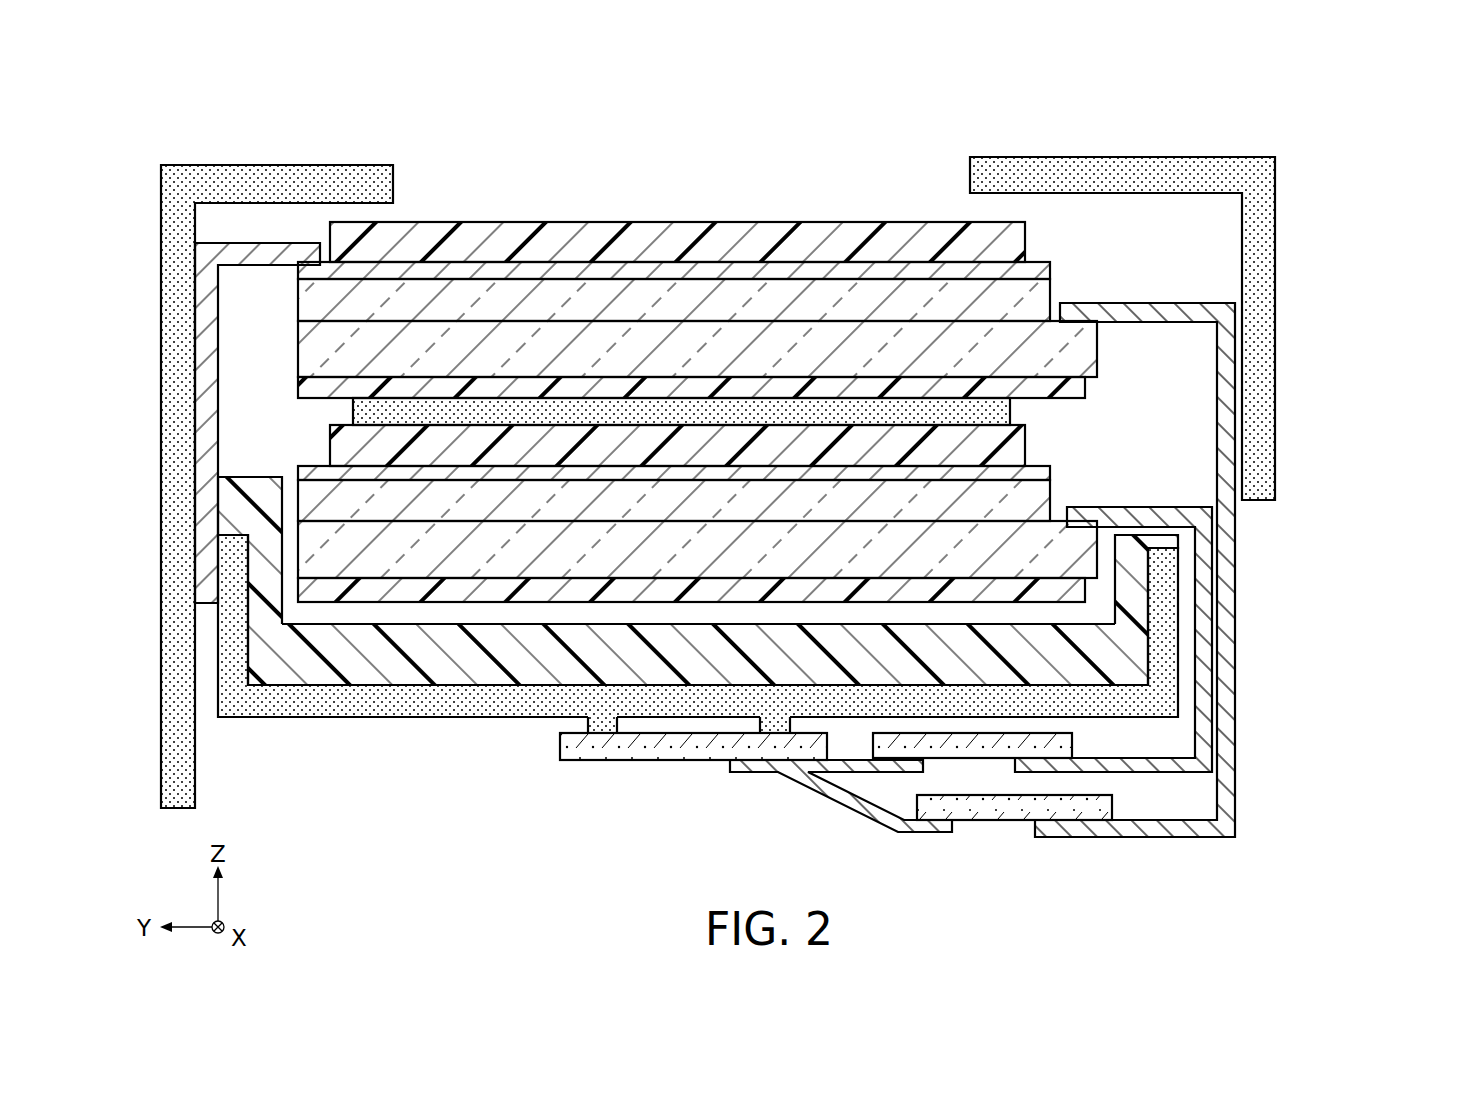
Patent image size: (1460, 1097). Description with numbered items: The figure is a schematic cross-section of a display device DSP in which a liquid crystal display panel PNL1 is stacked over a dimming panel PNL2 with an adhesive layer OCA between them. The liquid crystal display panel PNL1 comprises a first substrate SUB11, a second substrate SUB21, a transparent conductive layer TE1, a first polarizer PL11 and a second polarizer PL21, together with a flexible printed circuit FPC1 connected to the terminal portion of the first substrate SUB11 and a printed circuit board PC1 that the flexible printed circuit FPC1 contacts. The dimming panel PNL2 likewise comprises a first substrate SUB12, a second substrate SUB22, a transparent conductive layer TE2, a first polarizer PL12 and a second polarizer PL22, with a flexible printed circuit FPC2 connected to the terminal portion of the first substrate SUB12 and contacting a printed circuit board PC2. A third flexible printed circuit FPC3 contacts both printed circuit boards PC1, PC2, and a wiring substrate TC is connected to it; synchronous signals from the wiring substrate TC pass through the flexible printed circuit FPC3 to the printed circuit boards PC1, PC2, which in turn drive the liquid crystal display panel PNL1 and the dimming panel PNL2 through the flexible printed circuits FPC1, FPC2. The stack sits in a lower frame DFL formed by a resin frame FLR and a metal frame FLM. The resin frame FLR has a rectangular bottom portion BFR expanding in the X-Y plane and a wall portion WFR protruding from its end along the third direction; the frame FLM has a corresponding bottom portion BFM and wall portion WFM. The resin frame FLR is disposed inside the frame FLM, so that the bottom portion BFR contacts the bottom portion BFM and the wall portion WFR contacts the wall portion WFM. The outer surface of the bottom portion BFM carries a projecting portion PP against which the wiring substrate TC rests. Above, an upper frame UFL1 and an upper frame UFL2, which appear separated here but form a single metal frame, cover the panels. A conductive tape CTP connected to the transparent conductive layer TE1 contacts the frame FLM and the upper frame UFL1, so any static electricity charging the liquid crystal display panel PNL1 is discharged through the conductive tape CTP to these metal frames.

The display device DSP is at (1283, 115).
The upper frame UFL1 is at (252, 165).
The upper frame UFL2 is at (1167, 168).
The conductive tape CTP is at (208, 388).
The liquid crystal display panel PNL1 is at (877, 311).
The second polarizer PL21 is at (1013, 243).
The transparent conductive layer TE1 is at (1038, 268).
The second substrate SUB21 is at (1040, 297).
The first substrate SUB11 is at (1085, 345).
The first polarizer PL11 is at (1072, 388).
The adhesive layer OCA is at (358, 413).
The dimming panel PNL2 is at (877, 521).
The second polarizer PL22 is at (1018, 450).
The transparent conductive layer TE2 is at (1040, 474).
The second substrate SUB22 is at (1040, 497).
The first substrate SUB12 is at (1083, 553).
The first polarizer PL12 is at (1073, 592).
The wall portion WFR is at (260, 574).
The wall portion WFM is at (225, 664).
The bottom portion BFR is at (412, 672).
The bottom portion BFM is at (287, 706).
The resin frame FLR is at (1150, 652).
The frame FLM is at (1180, 681).
The lower frame DFL is at (1265, 617).
The projecting portion PP is at (603, 724).
The wiring substrate TC is at (673, 752).
The flexible printed circuit FPC1 is at (1230, 778).
The flexible printed circuit FPC2 is at (1207, 733).
The flexible printed circuit FPC3 is at (832, 800).
The printed circuit board PC1 is at (1020, 808).
The printed circuit board PC2 is at (965, 752).